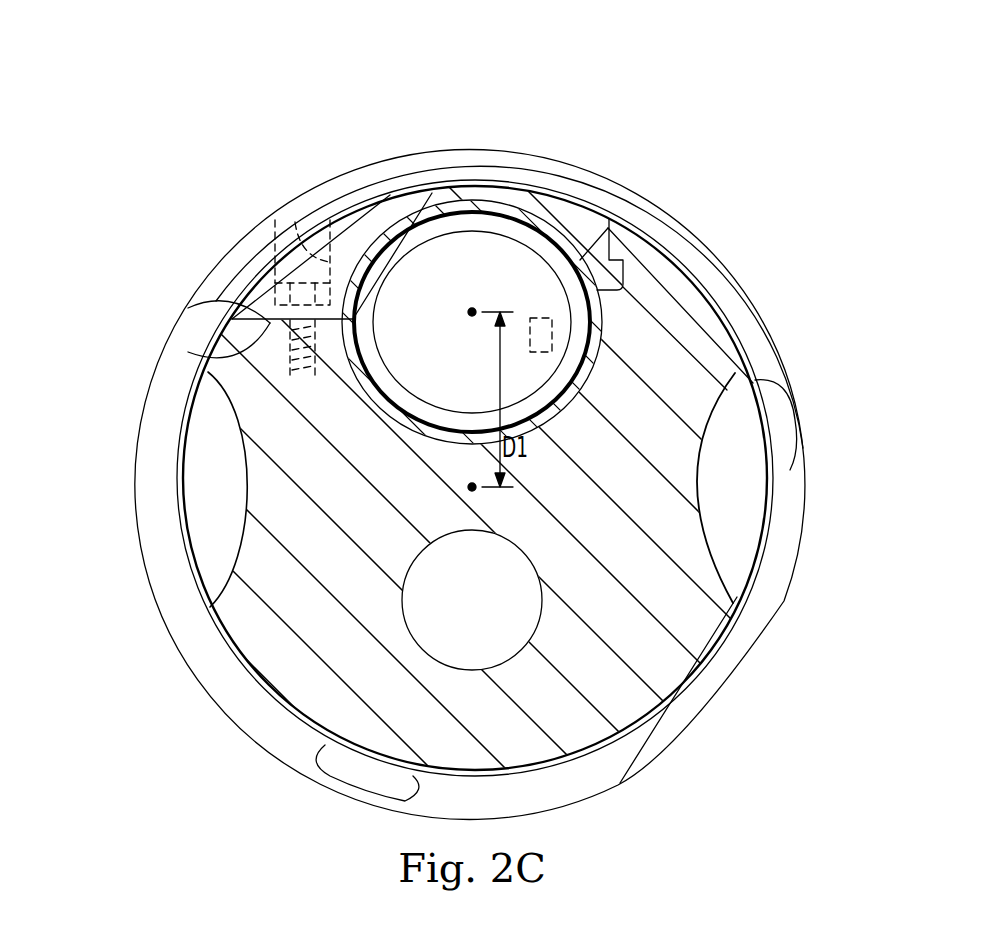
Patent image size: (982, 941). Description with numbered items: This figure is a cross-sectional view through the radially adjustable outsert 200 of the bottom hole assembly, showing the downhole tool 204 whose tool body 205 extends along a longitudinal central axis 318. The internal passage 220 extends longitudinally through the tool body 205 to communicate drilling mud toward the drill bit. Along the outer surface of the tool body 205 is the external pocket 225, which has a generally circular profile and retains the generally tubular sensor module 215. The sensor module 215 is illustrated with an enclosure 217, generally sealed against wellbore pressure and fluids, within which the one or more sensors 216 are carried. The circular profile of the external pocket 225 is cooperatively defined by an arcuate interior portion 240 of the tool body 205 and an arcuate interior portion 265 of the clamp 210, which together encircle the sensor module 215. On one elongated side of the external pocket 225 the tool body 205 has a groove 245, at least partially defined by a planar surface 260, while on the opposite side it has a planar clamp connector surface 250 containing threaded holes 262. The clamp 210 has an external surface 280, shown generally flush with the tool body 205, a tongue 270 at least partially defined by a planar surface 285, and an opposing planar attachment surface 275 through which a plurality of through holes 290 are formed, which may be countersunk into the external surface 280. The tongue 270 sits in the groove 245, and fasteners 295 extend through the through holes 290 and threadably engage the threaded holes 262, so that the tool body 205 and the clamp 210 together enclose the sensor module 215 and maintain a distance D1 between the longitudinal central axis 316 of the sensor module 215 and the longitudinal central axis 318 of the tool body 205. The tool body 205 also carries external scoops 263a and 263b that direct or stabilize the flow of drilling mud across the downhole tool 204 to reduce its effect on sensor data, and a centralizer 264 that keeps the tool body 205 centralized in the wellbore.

The radially adjustable outsert 200 is at (206, 62).
The downhole tool 204 is at (176, 672).
The tool body 205 is at (703, 637).
The clamp 210 is at (370, 183).
The sensor module 215 is at (490, 183).
The sensors 216 is at (540, 354).
The enclosure 217 is at (540, 208).
The internal passage 220 is at (449, 643).
The external pocket 225 is at (403, 385).
The arcuate interior portion of the tool body 240 is at (383, 370).
The groove 245 is at (620, 290).
The clamp connector surface 250 is at (243, 303).
The planar surface 260 is at (582, 292).
The threaded holes 262 is at (300, 380).
The external scoop 263a is at (197, 467).
The external scoop 263b is at (733, 533).
The centralizer 264 is at (608, 777).
The arcuate interior portion of the clamp 265 is at (470, 210).
The tongue 270 is at (627, 270).
The attachment surface 275 is at (233, 348).
The external surface 280 is at (398, 170).
The planar surface 285 is at (602, 325).
The through holes 290 is at (295, 222).
The fasteners 295 is at (273, 252).
The longitudinal central axis of the sensor module 316 is at (472, 320).
The longitudinal central axis 318 is at (472, 492).